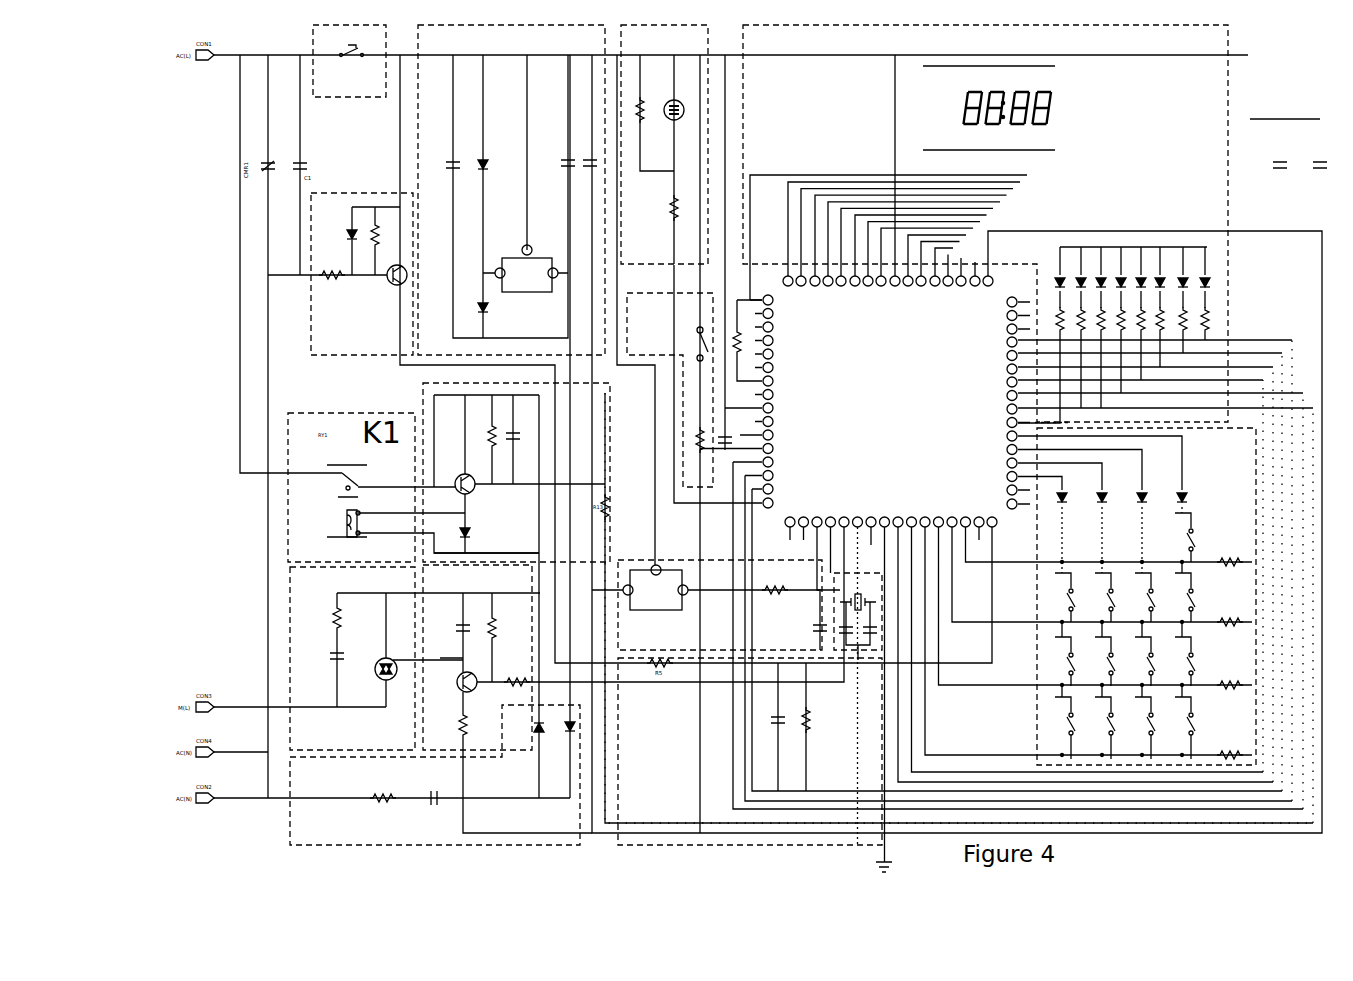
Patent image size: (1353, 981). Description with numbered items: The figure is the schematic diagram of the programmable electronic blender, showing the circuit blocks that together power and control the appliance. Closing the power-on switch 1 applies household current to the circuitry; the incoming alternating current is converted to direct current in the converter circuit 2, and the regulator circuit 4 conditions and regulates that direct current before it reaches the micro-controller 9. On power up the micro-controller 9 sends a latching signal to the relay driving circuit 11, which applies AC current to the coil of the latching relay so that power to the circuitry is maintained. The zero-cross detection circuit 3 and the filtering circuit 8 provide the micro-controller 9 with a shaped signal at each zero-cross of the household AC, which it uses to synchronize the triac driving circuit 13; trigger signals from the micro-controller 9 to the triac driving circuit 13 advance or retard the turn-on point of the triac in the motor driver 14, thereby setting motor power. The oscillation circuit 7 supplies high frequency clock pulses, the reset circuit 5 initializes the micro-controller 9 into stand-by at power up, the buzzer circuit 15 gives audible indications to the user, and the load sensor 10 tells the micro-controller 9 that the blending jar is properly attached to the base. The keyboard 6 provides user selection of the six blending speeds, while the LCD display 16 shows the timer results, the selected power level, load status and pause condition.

The start switch 1 is at (349, 61).
The converter circuit 2 is at (435, 775).
The zero-cross detection circuit 3 is at (340, 274).
The regulator circuit 4 is at (511, 190).
The reset circuit 5 is at (709, 605).
The keyboard 6 is at (1090, 596).
The oscillation circuit 7 is at (858, 630).
The filtering circuit 8 is at (755, 765).
The micro-controller 9 is at (941, 433).
The load sensor 10 is at (694, 390).
The relay driving circuit 11 is at (516, 472).
The triac driving circuit 13 is at (477, 657).
The motor driver 14 is at (415, 658).
The buzzer circuit 15 is at (664, 144).
The LCD display and LED indicators 16 is at (1037, 224).